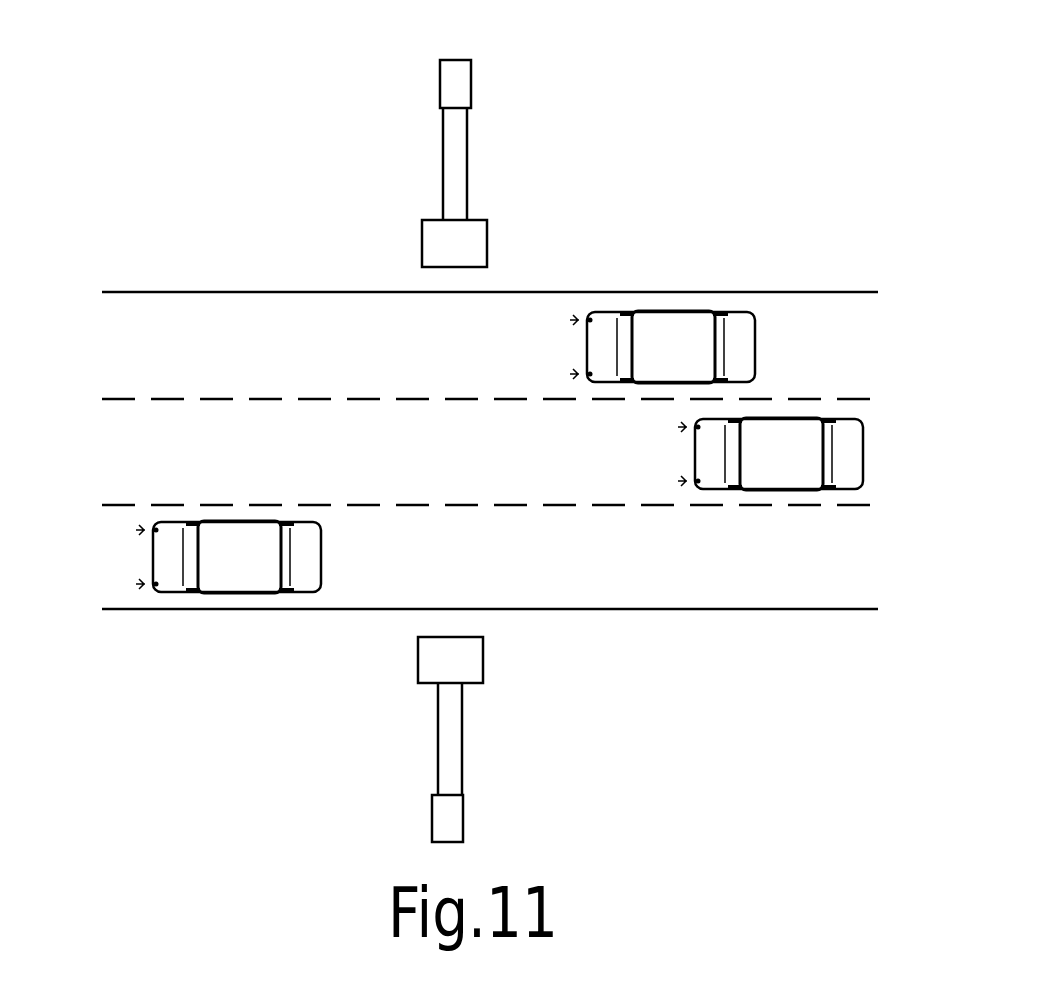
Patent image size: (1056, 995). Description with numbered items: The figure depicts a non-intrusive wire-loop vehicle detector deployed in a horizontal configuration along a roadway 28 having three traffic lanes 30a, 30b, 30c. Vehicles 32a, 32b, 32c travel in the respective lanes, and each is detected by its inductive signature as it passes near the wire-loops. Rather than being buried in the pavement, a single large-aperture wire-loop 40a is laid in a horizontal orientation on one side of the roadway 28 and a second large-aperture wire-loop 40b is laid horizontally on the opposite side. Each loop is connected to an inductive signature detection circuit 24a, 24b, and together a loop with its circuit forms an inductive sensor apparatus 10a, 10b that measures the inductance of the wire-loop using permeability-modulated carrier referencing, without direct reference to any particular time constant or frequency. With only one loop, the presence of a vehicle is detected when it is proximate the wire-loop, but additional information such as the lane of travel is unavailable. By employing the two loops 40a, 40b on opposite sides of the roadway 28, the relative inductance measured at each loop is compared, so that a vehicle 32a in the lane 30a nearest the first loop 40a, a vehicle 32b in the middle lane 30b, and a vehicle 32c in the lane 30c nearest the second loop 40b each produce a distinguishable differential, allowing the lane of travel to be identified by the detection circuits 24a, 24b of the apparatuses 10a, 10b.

The inductive sensor apparatus 10a is at (645, 170).
The inductive sensor apparatus 10b is at (328, 736).
The inductive signature detection circuit 24a is at (462, 82).
The inductive signature detection circuit 24b is at (452, 817).
The roadway 28 is at (803, 291).
The traffic lane 30a is at (888, 356).
The traffic lane 30b is at (172, 463).
The traffic lane 30c is at (865, 553).
The vehicle 32a is at (675, 330).
The vehicle 32b is at (797, 448).
The vehicle 32c is at (230, 570).
The large-aperture wire-loop 40a is at (487, 240).
The large-aperture wire-loop 40b is at (483, 655).